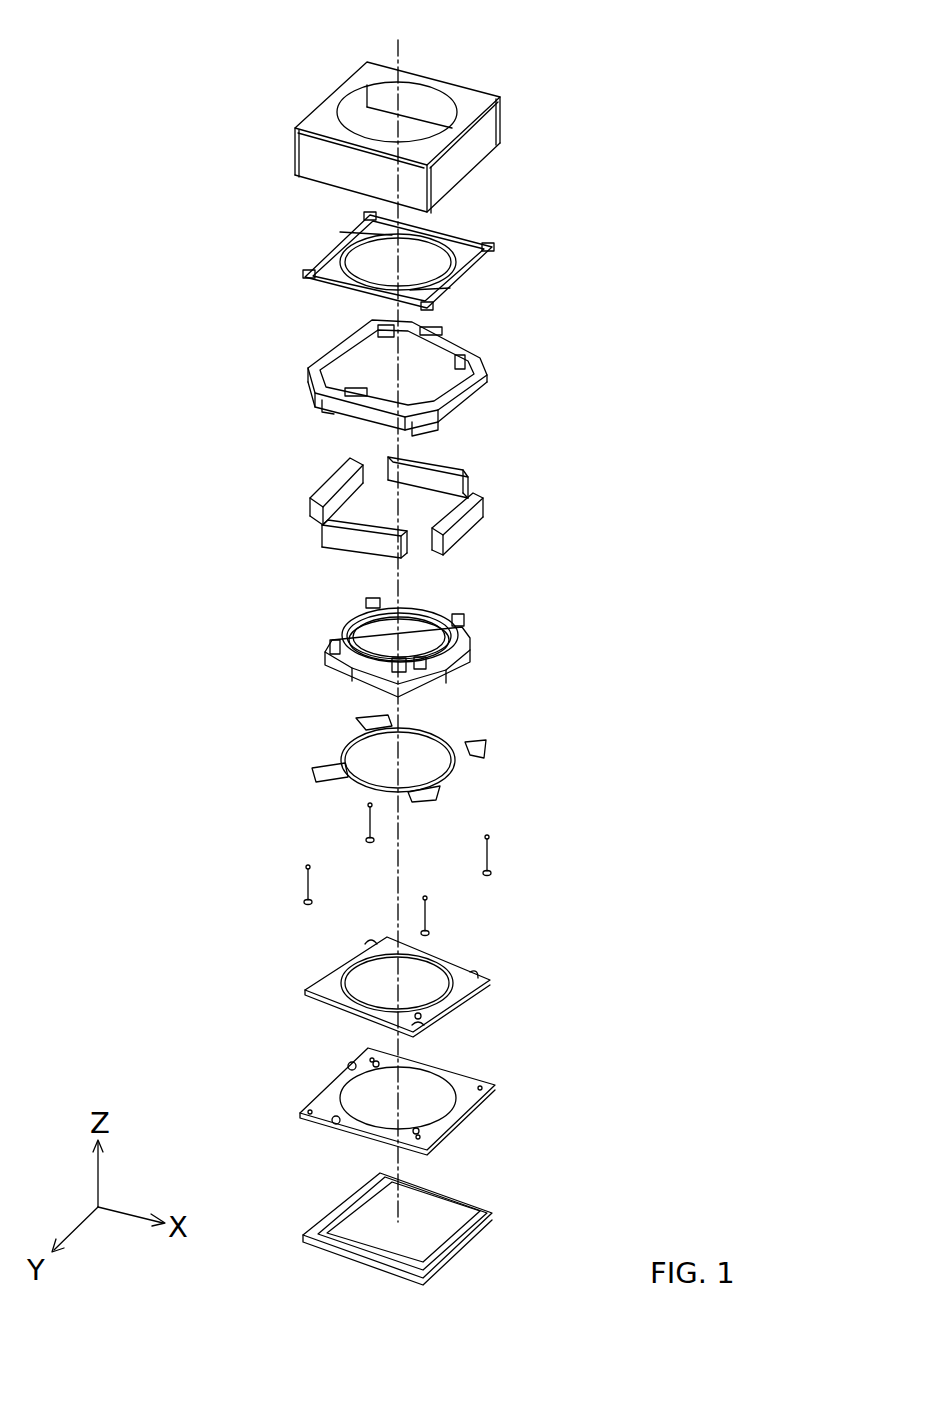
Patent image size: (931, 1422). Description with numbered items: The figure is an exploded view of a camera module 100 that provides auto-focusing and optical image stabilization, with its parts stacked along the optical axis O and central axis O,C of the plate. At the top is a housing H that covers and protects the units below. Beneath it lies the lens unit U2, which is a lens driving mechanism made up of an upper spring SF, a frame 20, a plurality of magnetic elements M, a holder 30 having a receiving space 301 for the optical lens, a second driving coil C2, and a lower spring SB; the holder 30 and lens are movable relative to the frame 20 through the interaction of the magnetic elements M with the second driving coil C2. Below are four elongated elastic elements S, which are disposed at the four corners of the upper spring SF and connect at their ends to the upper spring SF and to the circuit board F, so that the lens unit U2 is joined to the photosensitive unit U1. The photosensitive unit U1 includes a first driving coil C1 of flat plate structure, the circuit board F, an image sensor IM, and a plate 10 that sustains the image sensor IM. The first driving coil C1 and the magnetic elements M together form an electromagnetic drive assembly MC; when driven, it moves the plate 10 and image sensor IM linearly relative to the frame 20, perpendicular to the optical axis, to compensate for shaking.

The camera module 100 is at (133, 43).
The optical axis and central axis O,C is at (398, 613).
The housing H is at (475, 150).
The electromagnetic drive assembly MC is at (153, 135).
The magnetic elements M is at (335, 482).
The first driving coil C1 is at (468, 983).
The lens unit U2 is at (270, 212).
The upper spring SF is at (480, 265).
The frame 20 is at (467, 387).
The holder 30 is at (452, 616).
The receiving space 301 is at (428, 632).
The second driving coil C2 is at (450, 670).
The lower spring SB is at (460, 770).
The elastic elements S is at (365, 827).
The photosensitive unit U1 is at (270, 946).
The circuit board F is at (470, 1093).
The image sensor IM is at (433, 1220).
The plate 10 is at (446, 1205).